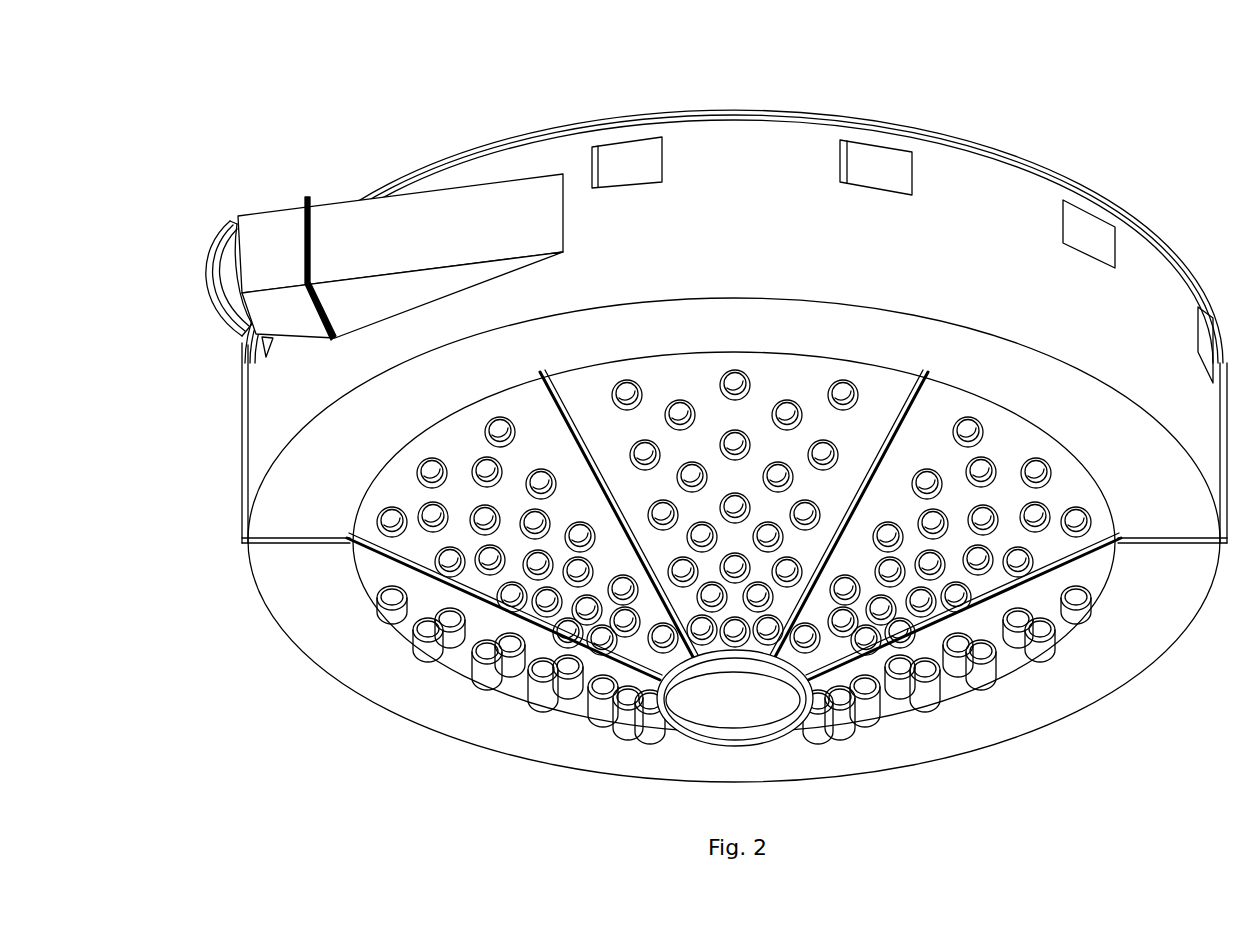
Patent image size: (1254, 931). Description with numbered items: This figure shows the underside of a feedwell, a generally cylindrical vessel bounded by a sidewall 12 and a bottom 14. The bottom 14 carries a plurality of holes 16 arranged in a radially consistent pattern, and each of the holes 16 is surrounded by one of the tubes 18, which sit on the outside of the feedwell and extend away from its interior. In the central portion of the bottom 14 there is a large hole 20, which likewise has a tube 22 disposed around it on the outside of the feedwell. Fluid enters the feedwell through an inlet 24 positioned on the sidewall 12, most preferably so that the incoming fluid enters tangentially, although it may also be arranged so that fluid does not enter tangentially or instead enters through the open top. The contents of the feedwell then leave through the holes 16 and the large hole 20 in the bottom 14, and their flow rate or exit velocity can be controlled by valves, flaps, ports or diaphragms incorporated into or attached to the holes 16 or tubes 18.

The sidewall 12 is at (995, 215).
The bottom 14 is at (397, 622).
The holes 16 is at (722, 378).
The tubes 18 is at (736, 378).
The large hole 20 is at (400, 112).
The tube 22 is at (563, 713).
The inlet 24 is at (218, 222).